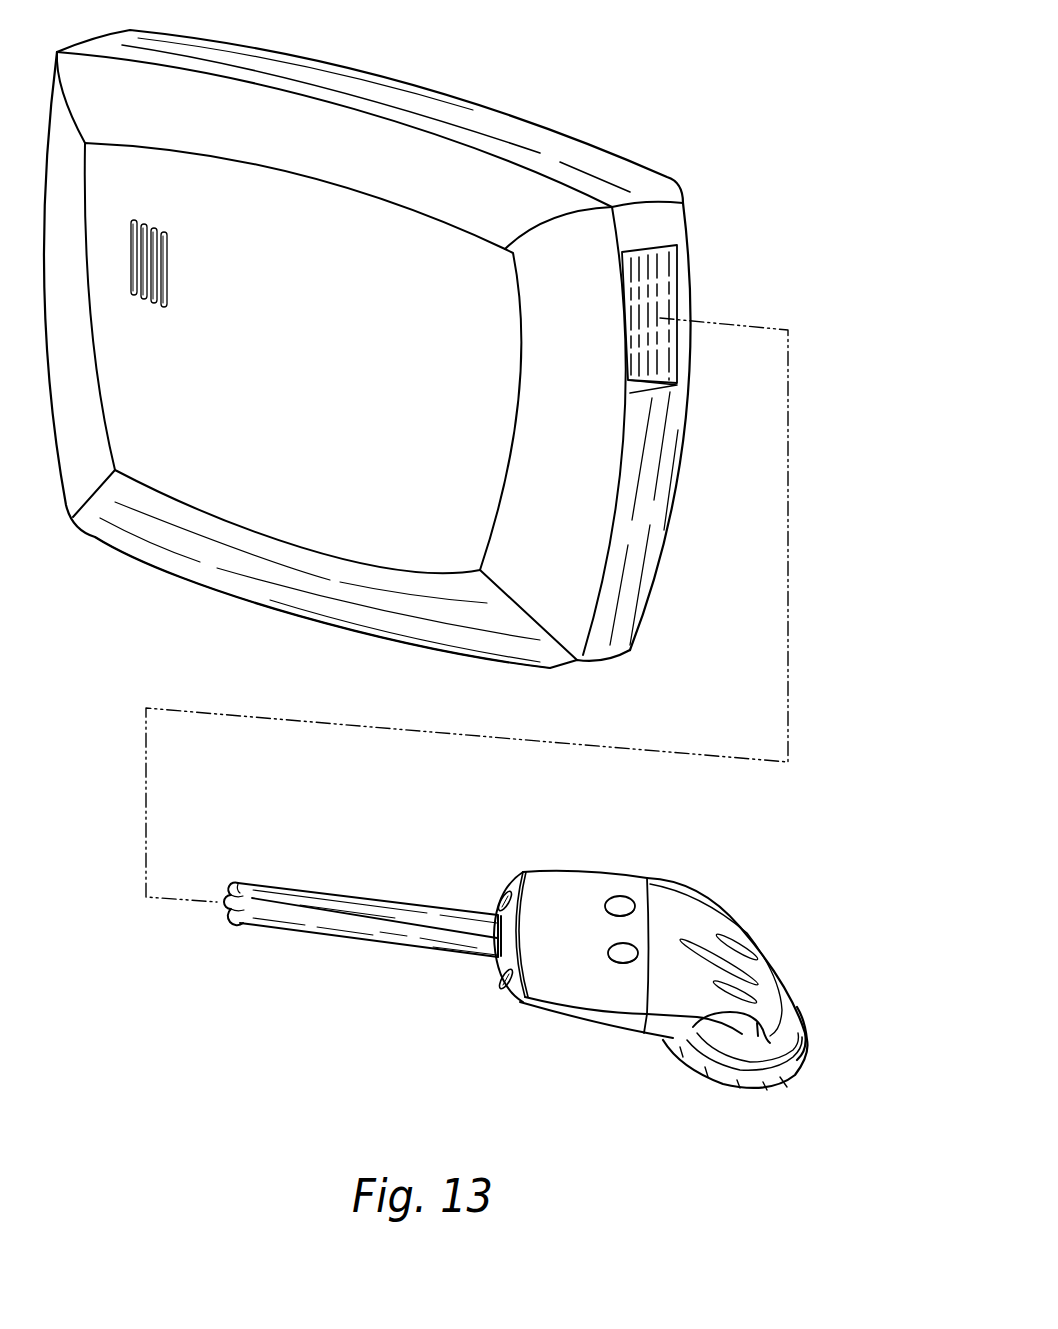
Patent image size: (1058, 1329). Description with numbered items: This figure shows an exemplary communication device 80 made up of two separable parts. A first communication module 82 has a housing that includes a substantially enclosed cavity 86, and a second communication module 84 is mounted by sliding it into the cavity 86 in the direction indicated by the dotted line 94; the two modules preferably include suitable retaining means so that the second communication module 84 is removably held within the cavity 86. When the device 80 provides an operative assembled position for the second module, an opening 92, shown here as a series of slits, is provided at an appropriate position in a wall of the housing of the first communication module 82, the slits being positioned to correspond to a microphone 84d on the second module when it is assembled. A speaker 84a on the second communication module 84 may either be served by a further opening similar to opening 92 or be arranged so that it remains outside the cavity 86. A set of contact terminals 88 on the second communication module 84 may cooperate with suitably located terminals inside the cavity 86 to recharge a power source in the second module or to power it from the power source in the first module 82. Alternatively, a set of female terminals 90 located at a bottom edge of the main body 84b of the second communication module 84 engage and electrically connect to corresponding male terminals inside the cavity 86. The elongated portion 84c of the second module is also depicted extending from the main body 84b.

The communication device 80 is at (640, 104).
The first communication module 82 is at (210, 618).
The second communication module 84 is at (493, 977).
The speaker 84a is at (744, 1096).
The main body 84b is at (607, 1040).
The key blade 84c is at (378, 955).
The microphone 84d is at (225, 925).
The cavity 86 is at (660, 285).
The contact terminals 88 is at (632, 955).
The female terminals 90 is at (500, 893).
The opening 92 is at (162, 328).
The dotted line 94 is at (787, 650).